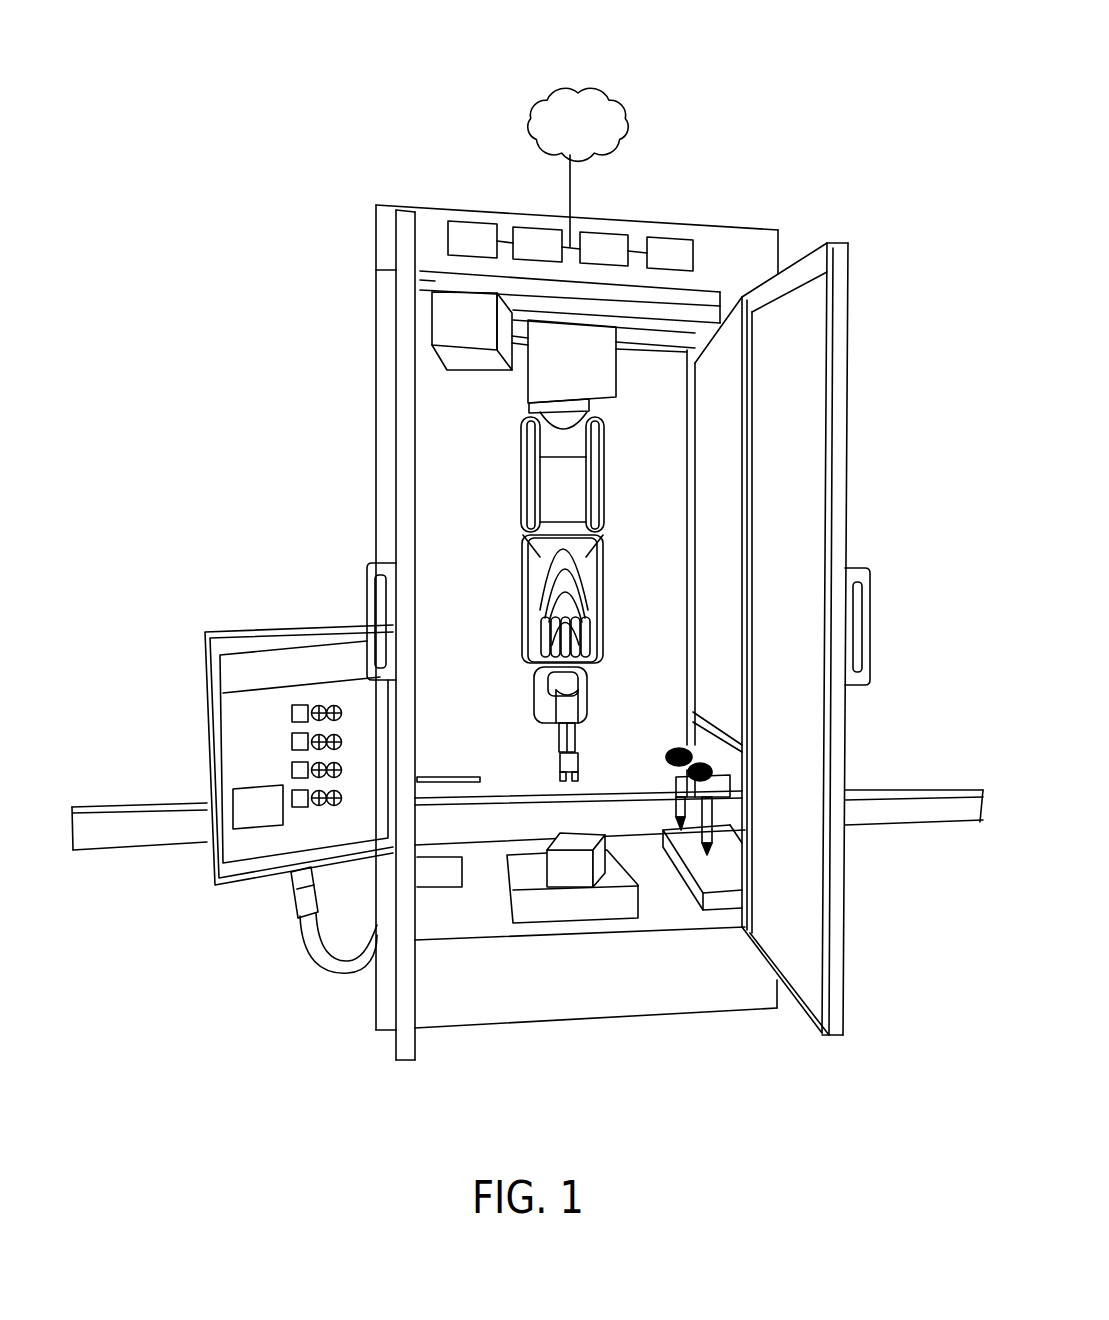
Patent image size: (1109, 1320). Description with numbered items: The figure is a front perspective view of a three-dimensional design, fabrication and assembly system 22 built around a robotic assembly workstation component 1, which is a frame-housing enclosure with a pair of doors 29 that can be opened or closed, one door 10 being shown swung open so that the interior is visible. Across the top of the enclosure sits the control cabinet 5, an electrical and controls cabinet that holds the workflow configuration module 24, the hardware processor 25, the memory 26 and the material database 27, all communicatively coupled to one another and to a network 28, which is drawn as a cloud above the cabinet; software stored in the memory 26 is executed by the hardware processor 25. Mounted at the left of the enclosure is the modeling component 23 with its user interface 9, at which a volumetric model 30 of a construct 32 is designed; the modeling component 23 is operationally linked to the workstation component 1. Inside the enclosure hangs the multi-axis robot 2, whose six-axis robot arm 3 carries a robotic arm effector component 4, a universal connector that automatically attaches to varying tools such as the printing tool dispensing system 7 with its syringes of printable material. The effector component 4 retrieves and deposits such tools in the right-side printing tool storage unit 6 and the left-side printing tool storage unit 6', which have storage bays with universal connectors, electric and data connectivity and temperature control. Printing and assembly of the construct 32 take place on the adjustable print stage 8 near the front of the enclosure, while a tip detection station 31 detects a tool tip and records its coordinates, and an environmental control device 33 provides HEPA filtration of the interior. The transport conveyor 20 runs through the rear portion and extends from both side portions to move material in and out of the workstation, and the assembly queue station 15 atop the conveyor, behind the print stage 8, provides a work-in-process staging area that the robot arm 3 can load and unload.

The robotic assembly workstation component 1 is at (337, 323).
The multi-axis robot 2 is at (507, 482).
The robot arm 3 is at (513, 625).
The robotic arm effector component 4 is at (543, 748).
The control cabinet 5 is at (783, 242).
The right-side interchangeable printing tool storage unit 6 is at (690, 778).
The left-side interchangeable printing tool storage unit 6' is at (466, 975).
The printing tool dispensing system 7 is at (605, 658).
The adjustable print stage 8 is at (535, 867).
The user interface 9 is at (242, 627).
The door 10 is at (710, 435).
The assembly queue station 15 is at (630, 823).
The transport conveyor 20 is at (937, 778).
The 3-D design, fabrication and assembly system 22 is at (264, 207).
The modeling component 23 is at (275, 572).
The workflow configuration module 24 is at (475, 233).
The hardware processor 25 is at (535, 240).
The memory 26 is at (620, 243).
The material database 27 is at (672, 250).
The network 28 is at (605, 103).
The doors 29 is at (847, 927).
The volumetric model 30 is at (247, 803).
The tip detection station 31 is at (462, 773).
The construct 32 is at (572, 868).
The environmental control device 33 is at (450, 307).